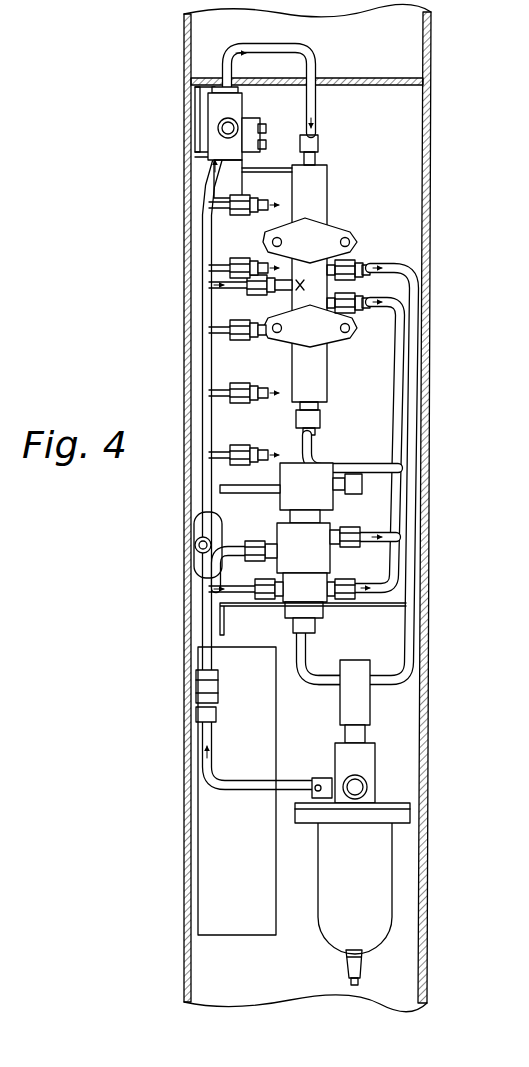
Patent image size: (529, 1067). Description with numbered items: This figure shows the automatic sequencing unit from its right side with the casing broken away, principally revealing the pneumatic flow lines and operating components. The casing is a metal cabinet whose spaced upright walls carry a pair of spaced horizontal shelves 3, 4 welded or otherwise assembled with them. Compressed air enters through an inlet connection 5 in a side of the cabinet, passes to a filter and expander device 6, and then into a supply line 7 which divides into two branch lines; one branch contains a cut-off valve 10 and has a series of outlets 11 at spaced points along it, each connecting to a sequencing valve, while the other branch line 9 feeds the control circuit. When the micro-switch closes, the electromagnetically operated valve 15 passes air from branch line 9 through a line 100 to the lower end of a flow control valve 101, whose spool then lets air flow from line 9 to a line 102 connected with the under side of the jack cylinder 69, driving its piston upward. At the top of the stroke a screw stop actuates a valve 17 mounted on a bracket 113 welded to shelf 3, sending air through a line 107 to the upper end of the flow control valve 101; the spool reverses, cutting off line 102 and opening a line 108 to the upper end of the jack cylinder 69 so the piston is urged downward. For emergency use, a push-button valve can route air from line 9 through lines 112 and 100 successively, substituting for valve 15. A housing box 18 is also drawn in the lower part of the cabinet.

The horizontal shelf 3 is at (404, 86).
The horizontal shelf 4 is at (384, 606).
The inlet connection 5 is at (358, 787).
The filter and expander device 6 is at (373, 804).
The supply line 7 is at (262, 790).
The branch line 9 is at (208, 186).
The cut-off valve 10 is at (192, 533).
The outlets 11 is at (262, 203).
The electromagnetically operated valve 15 is at (320, 540).
The valve 17 is at (238, 114).
The housing box 18 is at (260, 925).
The jack cylinder 69 is at (290, 482).
The line 100 is at (388, 584).
The flow control valve 101 is at (300, 296).
The line 102 is at (392, 306).
The line 107 is at (306, 58).
The line 108 is at (408, 283).
The line 112 is at (383, 528).
The bracket 113 is at (188, 96).